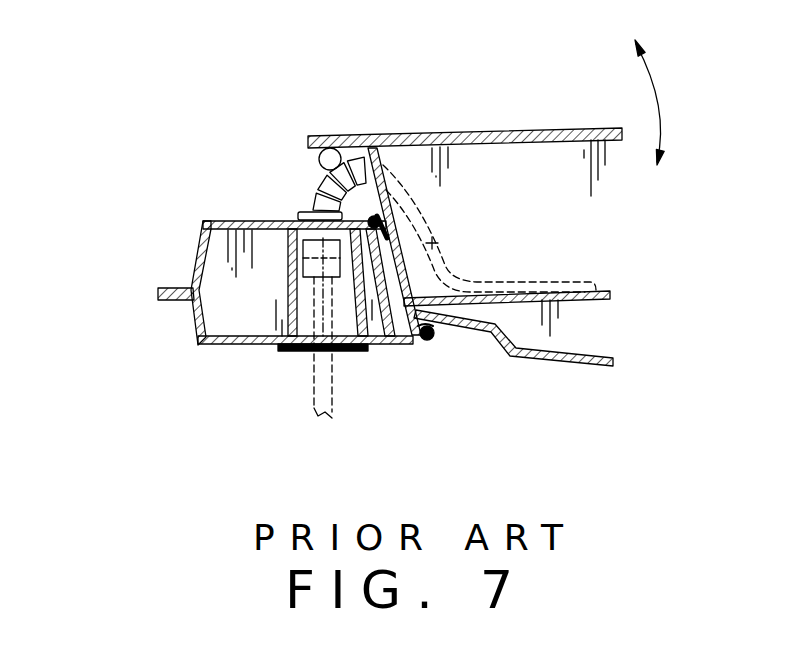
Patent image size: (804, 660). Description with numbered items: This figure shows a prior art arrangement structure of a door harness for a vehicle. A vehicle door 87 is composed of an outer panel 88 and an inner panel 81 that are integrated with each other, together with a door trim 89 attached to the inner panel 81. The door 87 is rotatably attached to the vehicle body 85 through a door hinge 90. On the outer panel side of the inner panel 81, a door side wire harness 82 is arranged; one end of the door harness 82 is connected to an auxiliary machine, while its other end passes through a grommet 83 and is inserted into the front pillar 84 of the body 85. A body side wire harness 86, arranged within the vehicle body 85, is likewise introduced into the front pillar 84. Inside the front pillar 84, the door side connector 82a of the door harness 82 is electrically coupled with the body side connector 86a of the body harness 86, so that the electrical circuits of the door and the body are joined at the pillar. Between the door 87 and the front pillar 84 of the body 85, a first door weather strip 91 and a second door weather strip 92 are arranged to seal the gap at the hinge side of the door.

The inner panel 81 is at (588, 302).
The door side wire harness 82 is at (432, 243).
The door side connector 82a is at (300, 231).
The grommet 83 is at (308, 200).
The front pillar 84 is at (216, 216).
The vehicle body 85 is at (194, 376).
The body side wire harness 86 is at (318, 405).
The body side connector 86a is at (293, 352).
The vehicle door 87 is at (398, 110).
The outer panel 88 is at (556, 128).
The door trim 89 is at (580, 370).
The door hinge 90 is at (324, 137).
The first door weather strip 91 is at (386, 213).
The second door weather strip 92 is at (428, 340).